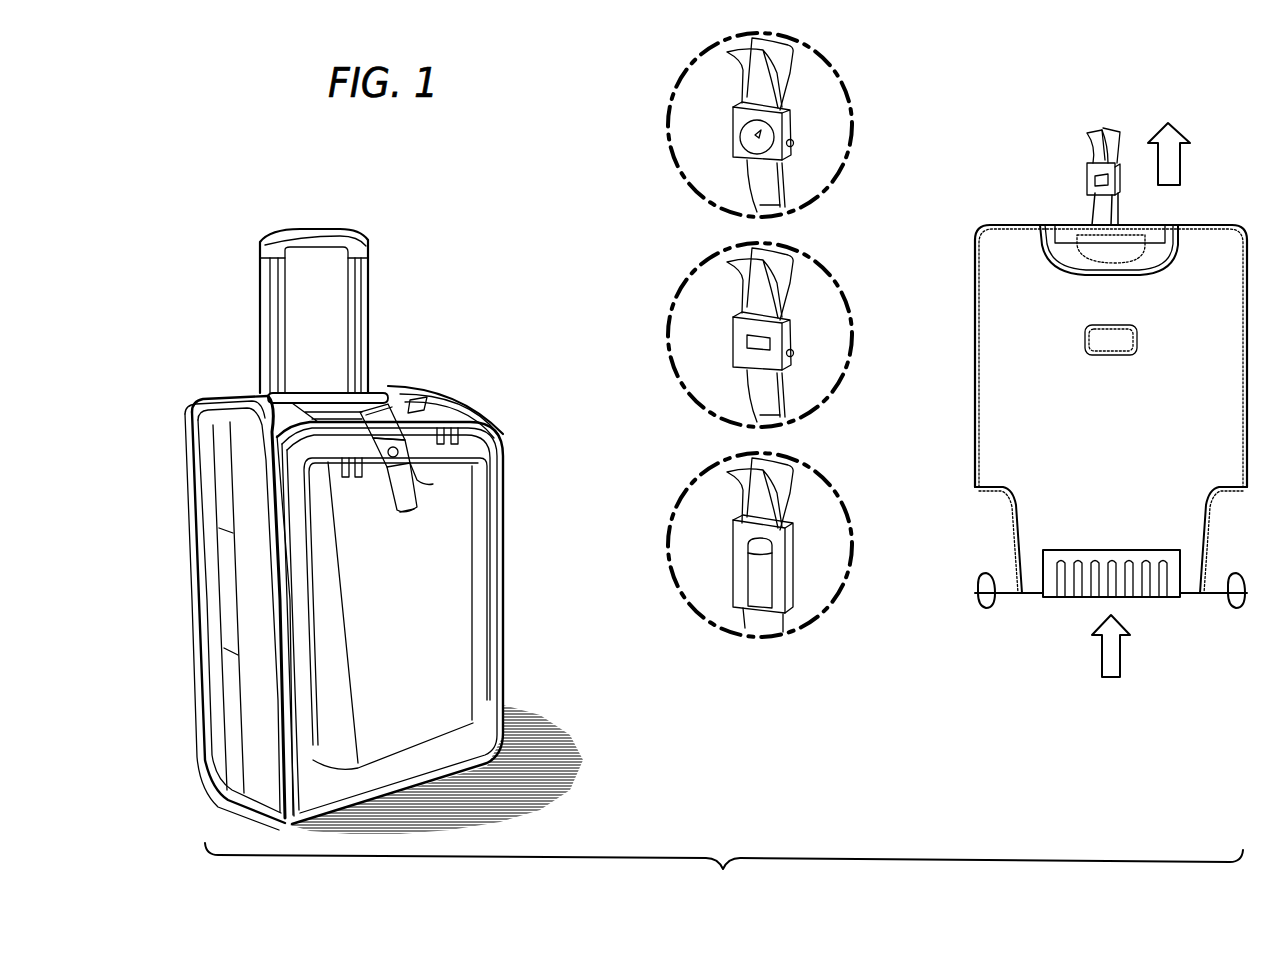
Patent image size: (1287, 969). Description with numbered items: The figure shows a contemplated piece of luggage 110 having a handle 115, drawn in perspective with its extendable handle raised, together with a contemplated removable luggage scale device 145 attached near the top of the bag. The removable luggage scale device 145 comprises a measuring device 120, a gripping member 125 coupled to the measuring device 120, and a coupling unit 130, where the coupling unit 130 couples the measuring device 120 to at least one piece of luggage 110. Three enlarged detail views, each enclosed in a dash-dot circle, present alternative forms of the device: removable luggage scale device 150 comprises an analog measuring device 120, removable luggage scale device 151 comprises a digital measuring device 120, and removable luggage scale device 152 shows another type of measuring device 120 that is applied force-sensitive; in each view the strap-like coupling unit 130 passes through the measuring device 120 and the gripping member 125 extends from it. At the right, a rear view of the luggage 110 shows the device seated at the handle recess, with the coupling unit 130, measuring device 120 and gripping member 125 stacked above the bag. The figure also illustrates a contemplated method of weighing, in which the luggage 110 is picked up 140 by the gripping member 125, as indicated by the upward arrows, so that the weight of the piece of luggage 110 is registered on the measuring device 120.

The piece of luggage 110 is at (512, 642).
The handle 115 is at (372, 305).
The measuring device 120 is at (403, 443).
The gripping member 125 is at (431, 485).
The coupling unit 130 is at (386, 413).
The picked up 140 is at (1186, 165).
The removable luggage scale device 145 is at (421, 518).
The removable luggage scale device 150 is at (668, 125).
The removable luggage scale device 151 is at (668, 335).
The removable luggage scale device 152 is at (668, 545).